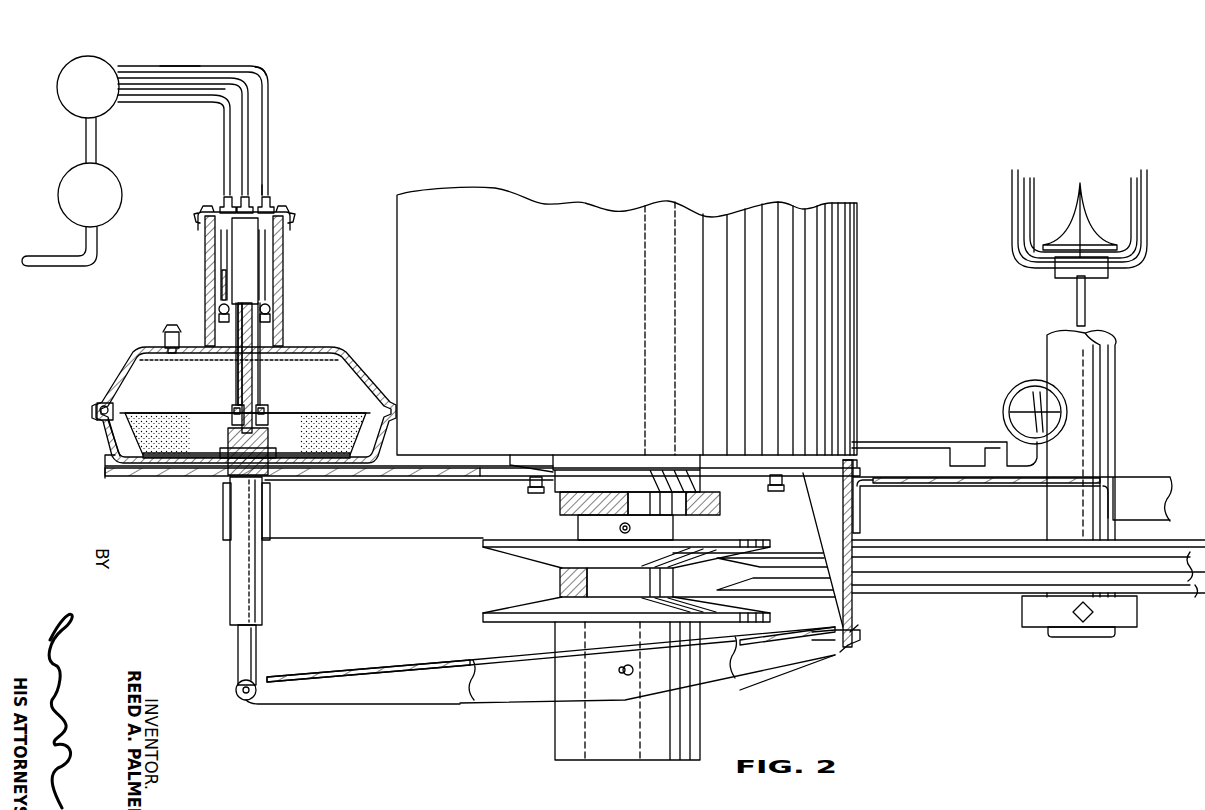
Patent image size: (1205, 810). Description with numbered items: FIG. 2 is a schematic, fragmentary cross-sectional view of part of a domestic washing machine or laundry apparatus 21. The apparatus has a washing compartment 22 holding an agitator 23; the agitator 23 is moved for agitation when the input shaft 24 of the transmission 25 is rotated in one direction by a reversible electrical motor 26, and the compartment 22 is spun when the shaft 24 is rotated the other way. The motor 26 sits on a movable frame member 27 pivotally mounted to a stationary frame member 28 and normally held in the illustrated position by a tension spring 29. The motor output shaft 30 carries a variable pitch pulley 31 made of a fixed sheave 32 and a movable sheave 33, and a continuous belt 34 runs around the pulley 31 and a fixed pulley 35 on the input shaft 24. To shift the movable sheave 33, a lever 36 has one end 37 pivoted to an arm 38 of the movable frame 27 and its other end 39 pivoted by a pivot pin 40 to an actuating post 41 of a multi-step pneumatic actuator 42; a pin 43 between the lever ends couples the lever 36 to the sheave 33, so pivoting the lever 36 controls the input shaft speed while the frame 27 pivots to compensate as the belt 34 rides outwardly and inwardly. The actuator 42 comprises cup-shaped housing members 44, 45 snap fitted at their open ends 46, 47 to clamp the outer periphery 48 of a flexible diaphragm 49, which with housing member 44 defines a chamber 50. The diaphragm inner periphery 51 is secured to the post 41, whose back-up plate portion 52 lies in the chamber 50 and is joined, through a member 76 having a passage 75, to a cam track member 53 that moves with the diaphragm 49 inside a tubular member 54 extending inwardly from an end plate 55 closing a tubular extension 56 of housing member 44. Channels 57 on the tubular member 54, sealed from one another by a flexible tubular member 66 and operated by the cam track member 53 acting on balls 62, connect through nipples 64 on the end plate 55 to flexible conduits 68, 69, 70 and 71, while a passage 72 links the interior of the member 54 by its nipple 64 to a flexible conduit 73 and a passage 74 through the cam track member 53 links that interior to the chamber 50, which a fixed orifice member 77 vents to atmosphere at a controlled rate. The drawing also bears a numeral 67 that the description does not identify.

The laundry apparatus 21 is at (902, 191).
The washing compartment means 22 is at (1140, 200).
The agitator means 23 is at (1068, 210).
The input shaft 24 is at (1130, 391).
The transmission means 25 is at (1068, 275).
The reversible electrical motor 26 is at (850, 320).
The movable frame member 27 is at (925, 445).
The stationary frame member 28 is at (1003, 485).
The tension spring means 29 is at (1017, 390).
The output shaft means 30 is at (690, 502).
The variable pitch pulley means 31 is at (470, 594).
The fixed sheave 32 is at (515, 550).
The movable sheave 33 is at (530, 612).
The continuous belt 34 is at (558, 577).
The fixed pulley 35 is at (985, 588).
The lever 36 is at (520, 697).
The one end of lever 37 is at (808, 655).
The arm 38 is at (866, 645).
The other end of lever 39 is at (290, 702).
The pivot pin 40 is at (238, 693).
The actuating post 41 is at (262, 598).
The multi-step pneumatically operated actuator means 42 is at (161, 277).
The pin means 43 is at (632, 664).
The cup-shaped housing member 44 is at (312, 348).
The cup-shaped housing member 45 is at (160, 480).
The open end 46 is at (108, 400).
The open end 47 is at (98, 402).
The outer peripheral means 48 is at (127, 420).
The flexible diaphragm means 49 is at (112, 433).
The chamber 50 is at (226, 387).
The inner peripheral means 51 is at (262, 440).
The diaphragm back-up plate portion 52 is at (190, 450).
The cam track member 53 is at (240, 370).
The tubular member 54 is at (230, 259).
The end wall plate means 55 is at (285, 208).
The tubular extension 56 is at (283, 250).
The channel means 57 is at (214, 245).
The ball 62 is at (270, 305).
The nipple or coupling 64 is at (222, 203).
The flexible tubular member 66 is at (218, 283).
The sleeve 67 is at (230, 389).
The flexible conduit means 68 is at (223, 136).
The flexible conduit means 69 is at (266, 78).
The flexible conduit means 70 is at (268, 133).
The flexible conduit means 71 is at (248, 110).
The passage means 72 is at (265, 183).
The flexible conduit 73 is at (203, 82).
The passage means 74 is at (262, 370).
The passage means 75 is at (233, 422).
The interconnecting member 76 is at (263, 405).
The fixed orifice member 77 is at (163, 337).